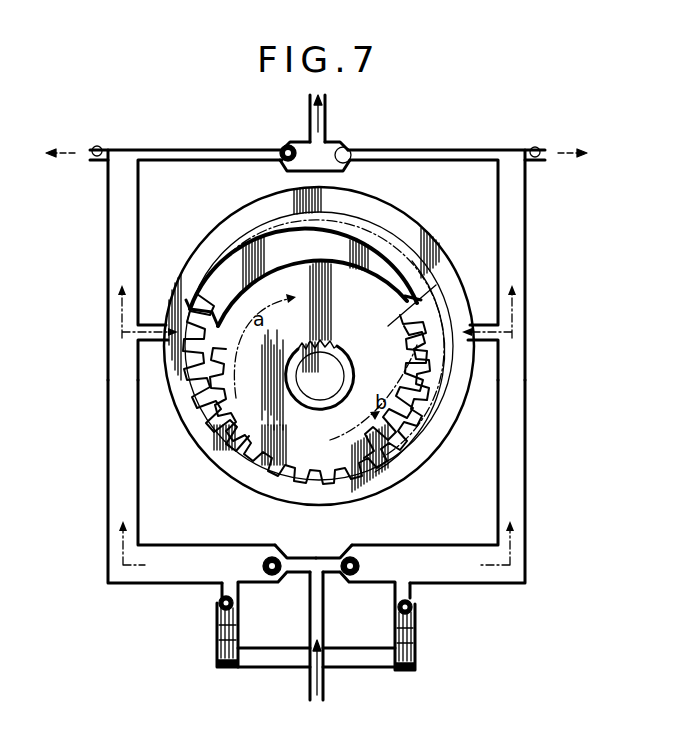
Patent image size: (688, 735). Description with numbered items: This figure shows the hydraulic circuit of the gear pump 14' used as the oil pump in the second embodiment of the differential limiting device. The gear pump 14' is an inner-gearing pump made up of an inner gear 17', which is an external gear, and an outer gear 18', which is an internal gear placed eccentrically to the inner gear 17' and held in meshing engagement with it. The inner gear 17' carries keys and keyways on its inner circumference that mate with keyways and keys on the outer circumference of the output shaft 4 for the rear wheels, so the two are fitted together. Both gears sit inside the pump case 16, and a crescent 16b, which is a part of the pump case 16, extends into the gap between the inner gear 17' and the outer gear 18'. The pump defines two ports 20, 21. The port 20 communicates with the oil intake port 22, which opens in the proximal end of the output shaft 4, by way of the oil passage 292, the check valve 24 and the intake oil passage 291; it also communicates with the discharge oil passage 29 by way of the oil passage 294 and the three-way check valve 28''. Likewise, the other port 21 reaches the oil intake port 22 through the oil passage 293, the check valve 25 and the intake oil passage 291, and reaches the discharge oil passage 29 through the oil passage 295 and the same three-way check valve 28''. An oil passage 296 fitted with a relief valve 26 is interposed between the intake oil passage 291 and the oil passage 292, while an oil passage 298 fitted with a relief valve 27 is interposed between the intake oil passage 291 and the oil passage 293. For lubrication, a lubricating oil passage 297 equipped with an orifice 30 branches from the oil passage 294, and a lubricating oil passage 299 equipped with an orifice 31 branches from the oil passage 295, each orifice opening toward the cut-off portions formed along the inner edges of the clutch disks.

The output shaft 4 is at (328, 352).
The gear pump 14' is at (309, 346).
The pump case 16 is at (430, 262).
The crescent 16b is at (250, 243).
The inner gear 17' is at (325, 417).
The outer gear 18' is at (232, 417).
The port 20 is at (205, 421).
The port 21 is at (440, 408).
The oil intake port 22 is at (326, 689).
The check valve 24 is at (270, 556).
The check valve 25 is at (350, 556).
The relief valve 26 is at (222, 597).
The relief valve 27 is at (414, 609).
The three-way check valve 28'' is at (302, 137).
The discharge oil passage 29 is at (328, 112).
The orifice 30 is at (104, 150).
The orifice 31 is at (529, 151).
The intake oil passage 291 is at (324, 615).
The oil passage 292 is at (108, 524).
The oil passage 293 is at (525, 526).
The oil passage 294 is at (108, 276).
The oil passage 295 is at (520, 280).
The oil passage 296 is at (249, 668).
The lubricating oil passage 297 is at (92, 160).
The oil passage 298 is at (396, 668).
The lubricating oil passage 299 is at (550, 166).